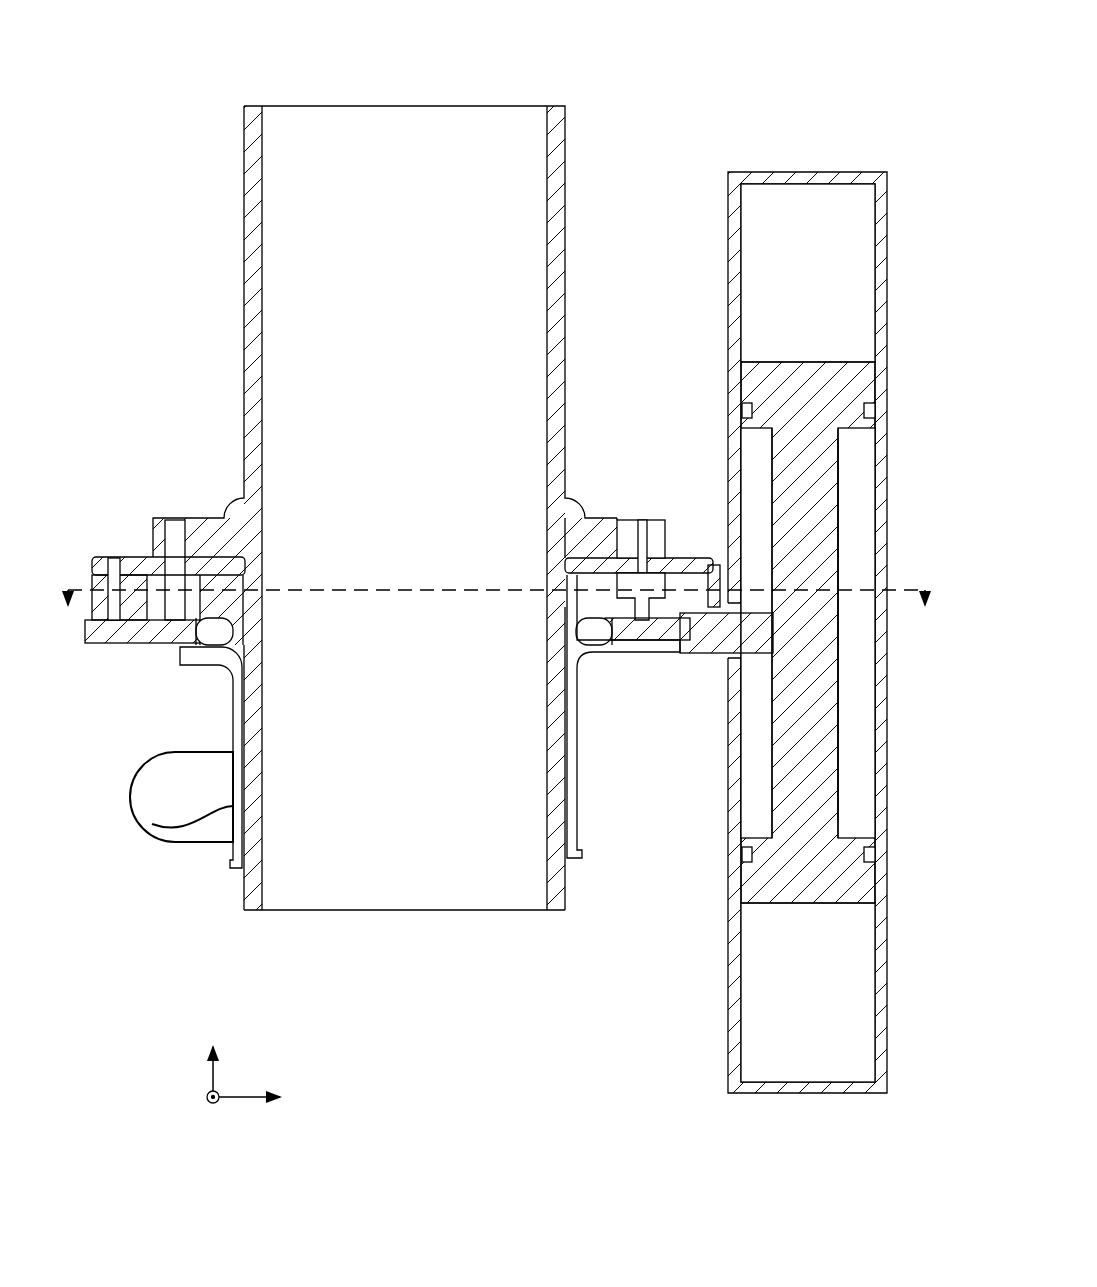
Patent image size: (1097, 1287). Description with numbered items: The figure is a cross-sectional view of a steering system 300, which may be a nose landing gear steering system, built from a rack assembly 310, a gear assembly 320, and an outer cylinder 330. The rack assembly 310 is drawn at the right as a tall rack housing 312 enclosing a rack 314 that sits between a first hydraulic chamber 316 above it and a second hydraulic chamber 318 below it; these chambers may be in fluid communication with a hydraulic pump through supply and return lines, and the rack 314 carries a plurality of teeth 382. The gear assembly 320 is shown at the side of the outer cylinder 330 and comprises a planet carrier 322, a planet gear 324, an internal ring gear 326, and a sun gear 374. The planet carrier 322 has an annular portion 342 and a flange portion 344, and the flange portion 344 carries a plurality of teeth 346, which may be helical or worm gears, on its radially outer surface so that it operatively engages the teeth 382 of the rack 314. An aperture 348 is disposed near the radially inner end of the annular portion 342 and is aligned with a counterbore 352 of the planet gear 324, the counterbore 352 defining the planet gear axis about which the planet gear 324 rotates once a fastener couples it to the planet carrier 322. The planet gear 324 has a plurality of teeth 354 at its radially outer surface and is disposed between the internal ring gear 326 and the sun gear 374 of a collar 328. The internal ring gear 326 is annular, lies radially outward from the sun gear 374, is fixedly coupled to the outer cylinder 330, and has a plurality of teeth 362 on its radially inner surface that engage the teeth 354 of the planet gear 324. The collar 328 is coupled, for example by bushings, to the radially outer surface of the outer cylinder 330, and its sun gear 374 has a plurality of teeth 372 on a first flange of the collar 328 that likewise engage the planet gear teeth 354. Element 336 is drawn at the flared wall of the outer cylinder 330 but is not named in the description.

The steering system 300 is at (800, 57).
The rack assembly 310 is at (697, 155).
The rack housing 312 is at (736, 290).
The rack 314 is at (765, 393).
The first hydraulic chamber 316 is at (808, 273).
The second hydraulic chamber 318 is at (808, 992).
The gear assembly 320 is at (672, 752).
The planet carrier 322 is at (703, 652).
The planet gear 324 is at (655, 598).
The internal ring gear 326 is at (690, 600).
The collar 328 is at (168, 826).
The outer cylinder 330 is at (242, 243).
The tube flange 336 is at (580, 522).
The annular portion 342 is at (658, 640).
The flange portion 344 is at (748, 628).
The plurality of teeth 346 is at (780, 632).
The aperture 348 is at (628, 625).
The counterbore 352 is at (640, 590).
The plurality of teeth 354 is at (652, 628).
The plurality of teeth 362 is at (148, 645).
The plurality of teeth 372 is at (195, 600).
The sun gear 374 is at (210, 605).
The plurality of teeth 382 is at (843, 498).